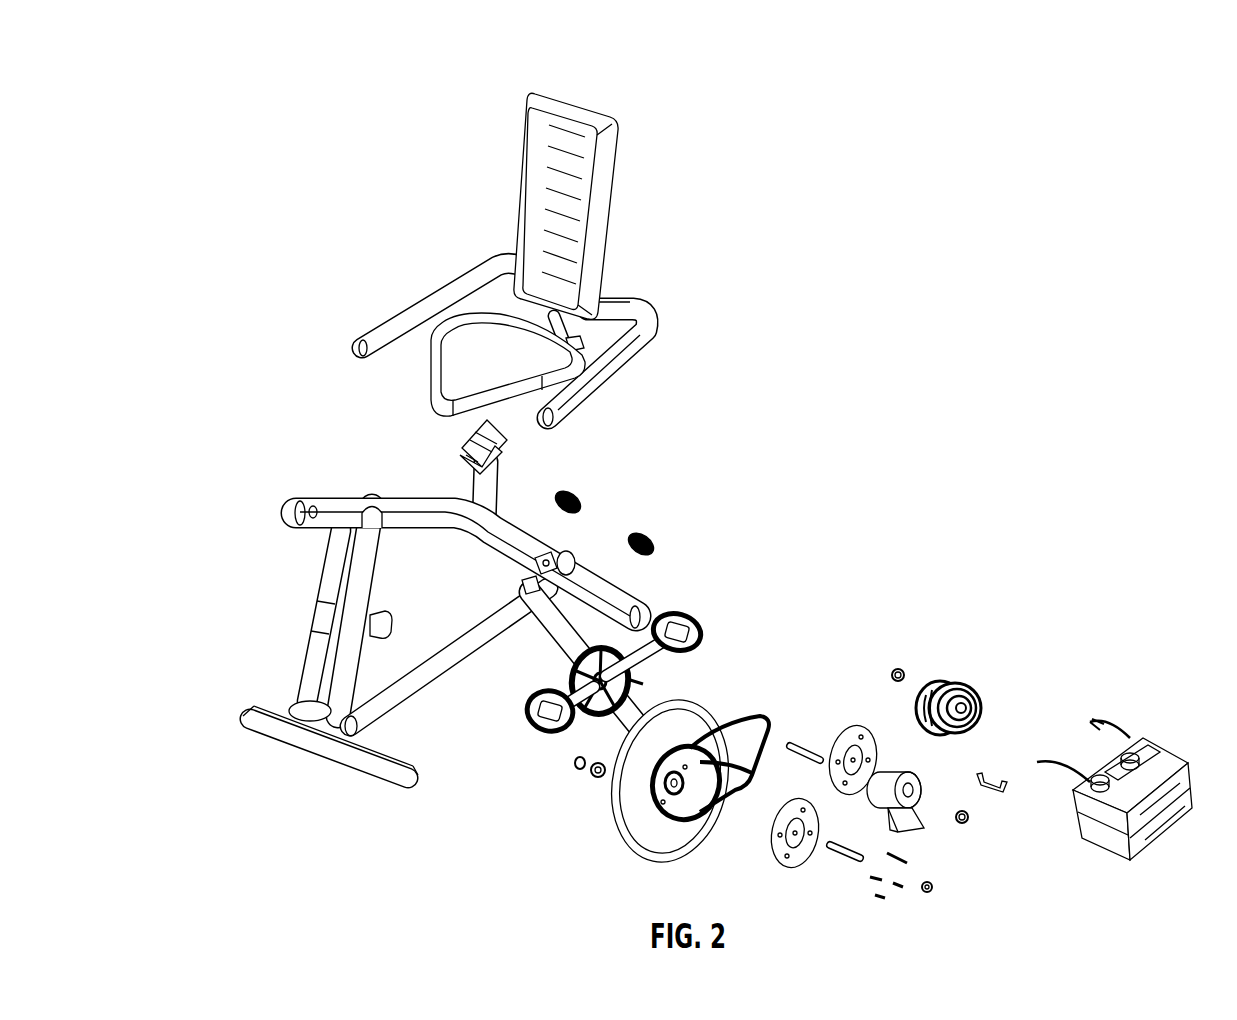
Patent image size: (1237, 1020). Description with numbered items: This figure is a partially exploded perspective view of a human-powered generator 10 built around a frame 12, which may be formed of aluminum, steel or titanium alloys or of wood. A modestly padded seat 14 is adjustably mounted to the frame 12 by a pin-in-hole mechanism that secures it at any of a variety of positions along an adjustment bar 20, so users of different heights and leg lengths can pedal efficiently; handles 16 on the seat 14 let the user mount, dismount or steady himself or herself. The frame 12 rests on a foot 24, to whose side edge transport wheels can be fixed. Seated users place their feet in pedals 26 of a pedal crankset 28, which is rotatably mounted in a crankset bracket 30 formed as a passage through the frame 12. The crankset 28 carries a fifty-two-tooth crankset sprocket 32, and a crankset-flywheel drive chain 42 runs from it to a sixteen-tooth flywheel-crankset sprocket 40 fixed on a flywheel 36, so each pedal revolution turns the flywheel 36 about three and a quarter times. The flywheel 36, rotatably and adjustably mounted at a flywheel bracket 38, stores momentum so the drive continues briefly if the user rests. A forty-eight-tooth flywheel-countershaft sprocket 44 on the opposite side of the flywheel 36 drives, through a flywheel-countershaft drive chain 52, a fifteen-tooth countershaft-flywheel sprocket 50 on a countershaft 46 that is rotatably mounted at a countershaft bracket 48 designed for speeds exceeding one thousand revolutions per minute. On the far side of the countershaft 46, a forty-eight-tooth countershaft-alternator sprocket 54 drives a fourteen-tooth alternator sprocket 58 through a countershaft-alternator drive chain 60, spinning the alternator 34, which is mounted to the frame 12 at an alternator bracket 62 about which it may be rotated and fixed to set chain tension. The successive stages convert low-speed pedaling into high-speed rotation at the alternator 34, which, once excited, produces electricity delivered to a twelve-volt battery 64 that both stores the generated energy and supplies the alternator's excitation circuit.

The generator 10 is at (786, 376).
The frame 12 is at (443, 660).
The seat 14 is at (573, 132).
The handles 16 is at (440, 294).
The adjustment bar 20 is at (477, 445).
The foot 24 is at (257, 728).
The pedals 26 is at (690, 627).
The pedal crankset 28 is at (653, 657).
The crankset bracket 30 is at (313, 512).
The crankset sprocket 32 is at (583, 661).
The alternator 34 is at (942, 685).
The flywheel 36 is at (638, 847).
The flywheel bracket 38 is at (381, 617).
The flywheel-crankset sprocket 40 is at (595, 780).
The crankset-flywheel drive chain 42 is at (640, 683).
The flywheel-countershaft sprocket 44 is at (803, 857).
The countershaft 46 is at (800, 743).
The countershaft bracket 48 is at (916, 812).
The countershaft-flywheel sprocket 50 is at (968, 818).
The flywheel-countershaft drive chain 52 is at (673, 820).
The countershaft-alternator sprocket 54 is at (867, 728).
The alternator sprocket 58 is at (900, 668).
The countershaft-alternator drive chain 60 is at (762, 712).
The alternator bracket 62 is at (993, 773).
The battery 64 is at (1167, 753).